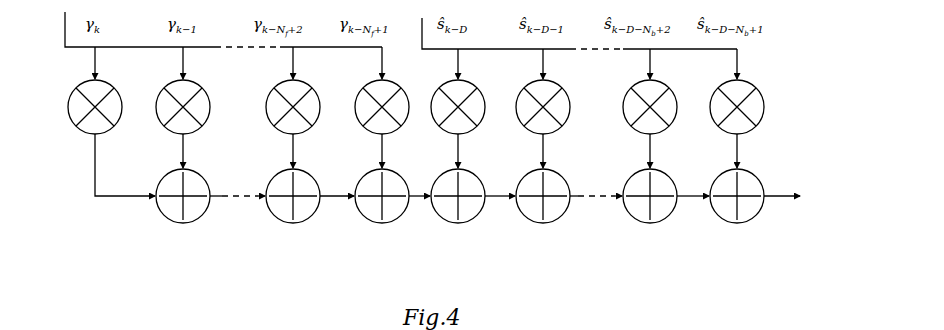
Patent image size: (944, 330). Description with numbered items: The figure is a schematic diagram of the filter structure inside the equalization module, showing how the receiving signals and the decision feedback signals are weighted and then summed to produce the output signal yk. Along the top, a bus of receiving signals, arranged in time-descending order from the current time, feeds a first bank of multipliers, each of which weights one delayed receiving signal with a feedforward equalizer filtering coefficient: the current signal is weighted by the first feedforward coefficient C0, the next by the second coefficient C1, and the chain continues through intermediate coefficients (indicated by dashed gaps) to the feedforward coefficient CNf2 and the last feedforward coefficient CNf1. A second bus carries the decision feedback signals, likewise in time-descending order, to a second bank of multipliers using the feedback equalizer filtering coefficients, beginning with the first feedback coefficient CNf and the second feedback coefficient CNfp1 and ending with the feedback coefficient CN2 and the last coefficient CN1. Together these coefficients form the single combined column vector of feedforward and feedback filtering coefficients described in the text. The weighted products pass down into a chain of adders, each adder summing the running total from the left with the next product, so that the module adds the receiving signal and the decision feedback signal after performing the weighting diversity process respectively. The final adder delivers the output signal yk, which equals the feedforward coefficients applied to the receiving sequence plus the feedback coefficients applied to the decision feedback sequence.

The first feedforward equalizer filtering coefficient C0 is at (86, 106).
The second feedforward equalizer filtering coefficient C1 is at (174, 106).
The feedforward equalizer filtering coefficient Nf-2 CNf2 is at (268, 106).
The last feedforward equalizer filtering coefficient CNf1 is at (359, 106).
The first feedback equalizer filtering coefficient CNf is at (443, 106).
The second feedback equalizer filtering coefficient CNfp1 is at (524, 106).
The feedback equalizer filtering coefficient N-2 CN2 is at (633, 106).
The last feedback equalizer filtering coefficient CN1 is at (721, 106).
The output signal yk is at (782, 182).